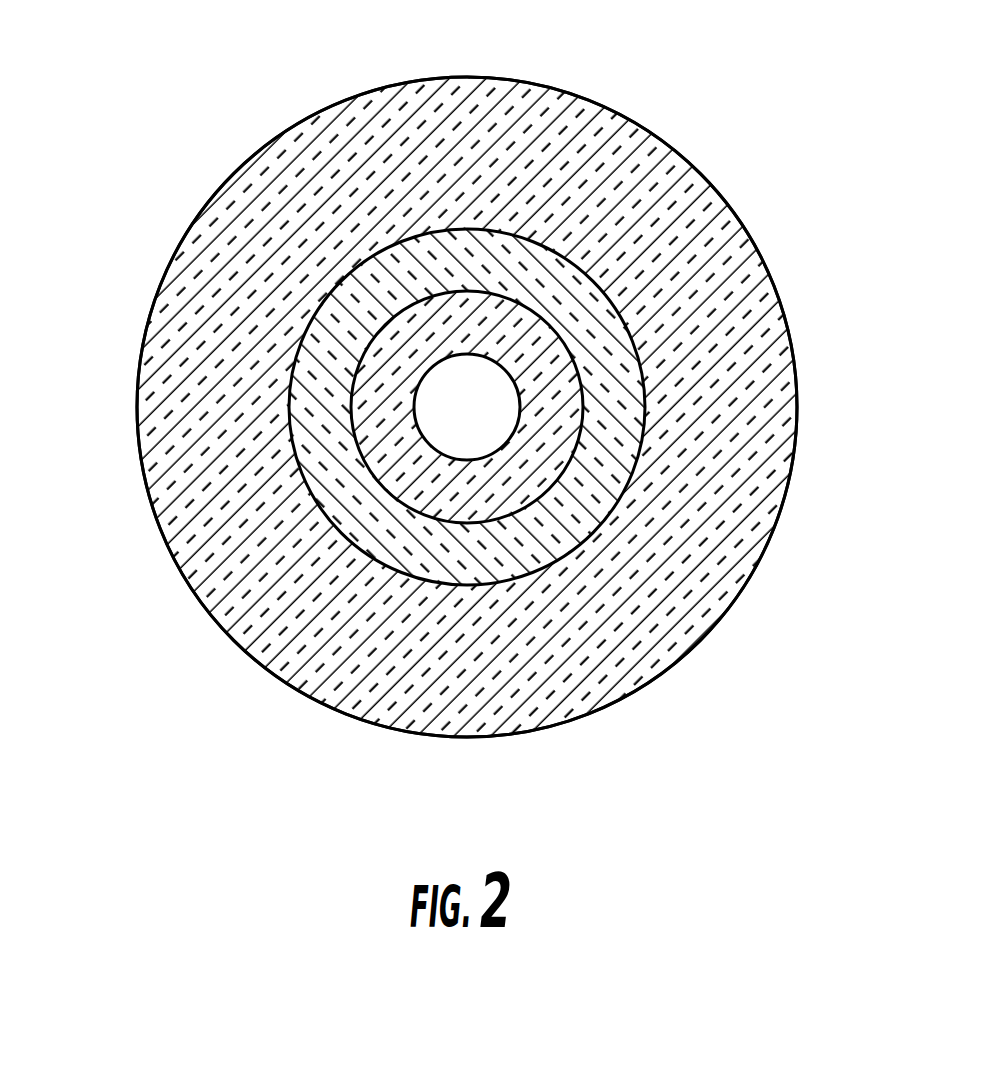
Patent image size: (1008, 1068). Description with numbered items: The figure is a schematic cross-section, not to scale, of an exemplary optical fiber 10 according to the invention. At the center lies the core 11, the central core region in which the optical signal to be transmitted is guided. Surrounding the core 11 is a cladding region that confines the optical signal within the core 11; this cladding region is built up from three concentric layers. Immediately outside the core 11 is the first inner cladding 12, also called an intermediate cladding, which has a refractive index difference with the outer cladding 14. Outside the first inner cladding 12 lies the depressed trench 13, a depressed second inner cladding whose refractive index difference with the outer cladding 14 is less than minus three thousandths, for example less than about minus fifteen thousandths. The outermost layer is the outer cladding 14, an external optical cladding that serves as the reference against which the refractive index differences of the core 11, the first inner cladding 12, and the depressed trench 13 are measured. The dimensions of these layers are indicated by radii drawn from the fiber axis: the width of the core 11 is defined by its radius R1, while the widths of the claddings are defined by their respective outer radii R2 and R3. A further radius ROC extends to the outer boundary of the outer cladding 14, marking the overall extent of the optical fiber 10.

The optical fiber 10 is at (695, 108).
The core 11 is at (367, 350).
The first inner cladding 12 is at (543, 337).
The depressed trench 13 is at (300, 396).
The outer cladding 14 is at (705, 527).
The core radius R1 is at (473, 421).
The first inner cladding outer radius R2 is at (470, 376).
The depressed trench outer radius R3 is at (444, 363).
The outer cladding radius ROC is at (467, 407).